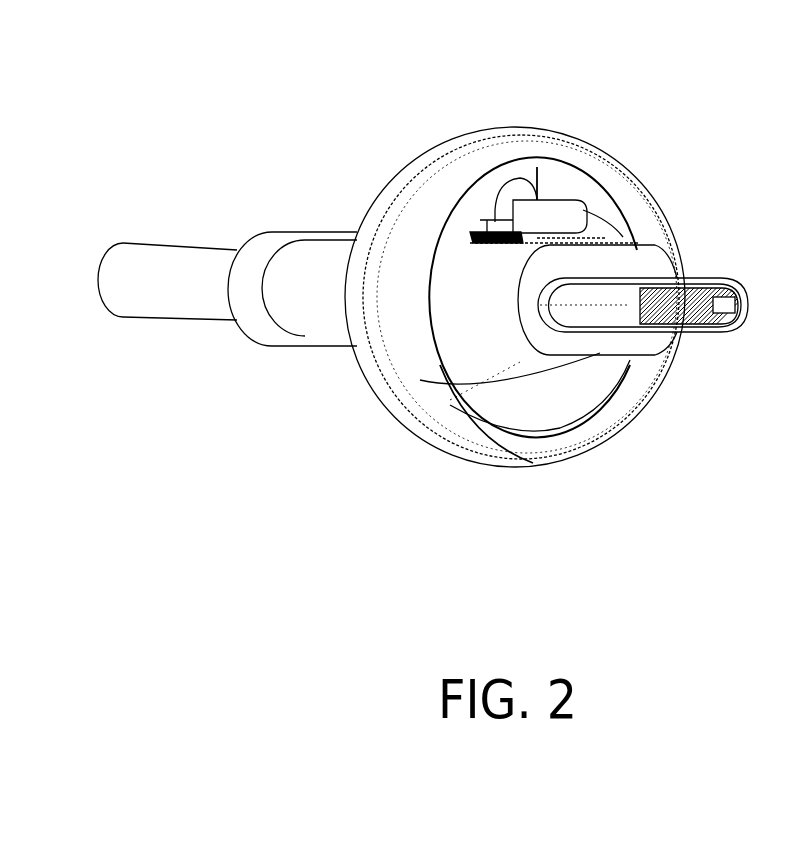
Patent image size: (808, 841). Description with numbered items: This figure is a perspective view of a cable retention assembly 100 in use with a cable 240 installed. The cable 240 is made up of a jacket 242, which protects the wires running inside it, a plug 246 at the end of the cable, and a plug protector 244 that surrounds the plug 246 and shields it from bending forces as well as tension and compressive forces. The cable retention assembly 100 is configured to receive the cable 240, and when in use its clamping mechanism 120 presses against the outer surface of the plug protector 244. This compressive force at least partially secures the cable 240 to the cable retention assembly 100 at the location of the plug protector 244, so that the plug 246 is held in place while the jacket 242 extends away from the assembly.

The cable retention assembly 100 is at (518, 128).
The clamping mechanism 120 is at (458, 235).
The cable 240 is at (253, 232).
The jacket 242 is at (147, 272).
The plug protector 244 is at (318, 297).
The plug 246 is at (623, 308).